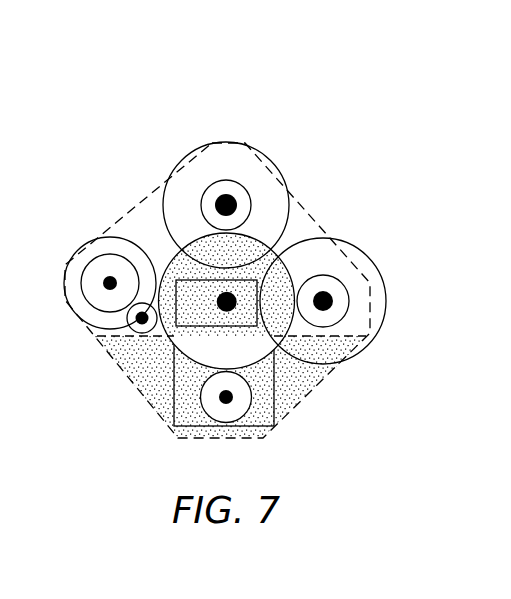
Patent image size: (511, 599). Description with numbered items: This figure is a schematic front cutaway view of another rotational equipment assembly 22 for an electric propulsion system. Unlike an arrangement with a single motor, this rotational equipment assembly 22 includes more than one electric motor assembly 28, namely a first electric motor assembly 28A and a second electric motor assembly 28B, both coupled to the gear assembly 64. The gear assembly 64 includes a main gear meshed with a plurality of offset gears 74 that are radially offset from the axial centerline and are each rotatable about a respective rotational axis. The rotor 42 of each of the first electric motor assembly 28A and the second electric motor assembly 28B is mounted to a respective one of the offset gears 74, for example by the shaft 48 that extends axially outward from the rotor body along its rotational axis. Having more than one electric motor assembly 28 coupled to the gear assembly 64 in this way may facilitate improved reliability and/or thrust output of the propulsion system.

The rotational equipment assembly 22 is at (308, 162).
The electric motor assembly 28 is at (325, 221).
The first electric motor assembly 28A is at (271, 157).
The second electric motor assembly 28B is at (350, 243).
The rotor 42 is at (231, 193).
The shaft 48 is at (216, 196).
The offset gears 74 is at (213, 207).
The gear assembly 64 is at (153, 355).